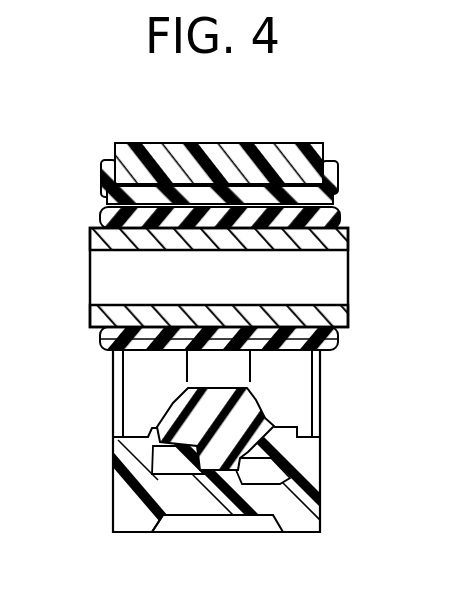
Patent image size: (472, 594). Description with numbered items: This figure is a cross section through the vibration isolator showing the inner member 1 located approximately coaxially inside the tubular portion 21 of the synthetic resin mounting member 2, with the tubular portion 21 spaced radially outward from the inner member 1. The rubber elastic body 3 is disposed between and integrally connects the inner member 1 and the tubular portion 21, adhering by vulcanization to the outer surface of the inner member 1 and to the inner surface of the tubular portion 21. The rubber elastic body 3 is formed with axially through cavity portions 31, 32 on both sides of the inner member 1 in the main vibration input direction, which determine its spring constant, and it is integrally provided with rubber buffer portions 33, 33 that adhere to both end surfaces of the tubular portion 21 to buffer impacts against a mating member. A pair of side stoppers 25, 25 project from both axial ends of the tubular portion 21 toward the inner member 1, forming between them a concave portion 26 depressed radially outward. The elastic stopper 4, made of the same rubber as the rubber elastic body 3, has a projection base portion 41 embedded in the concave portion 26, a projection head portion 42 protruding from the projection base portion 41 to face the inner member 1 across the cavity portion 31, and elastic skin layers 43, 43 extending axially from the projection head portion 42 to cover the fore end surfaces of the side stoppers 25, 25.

The inner member 1 is at (358, 246).
The mounting member 2 is at (285, 108).
The rubber elastic body 3 is at (85, 330).
The elastic stopper 4 is at (293, 413).
The tubular portion 21 is at (172, 168).
The side stoppers 25 is at (135, 456).
The concave portion 26 is at (163, 475).
The cavity portion 31 is at (315, 366).
The cavity portion 32 is at (326, 205).
The rubber buffer portions 33 is at (105, 170).
The projection base portion 41 is at (243, 462).
The projection head portion 42 is at (177, 406).
The elastic skin layers 43 is at (126, 422).